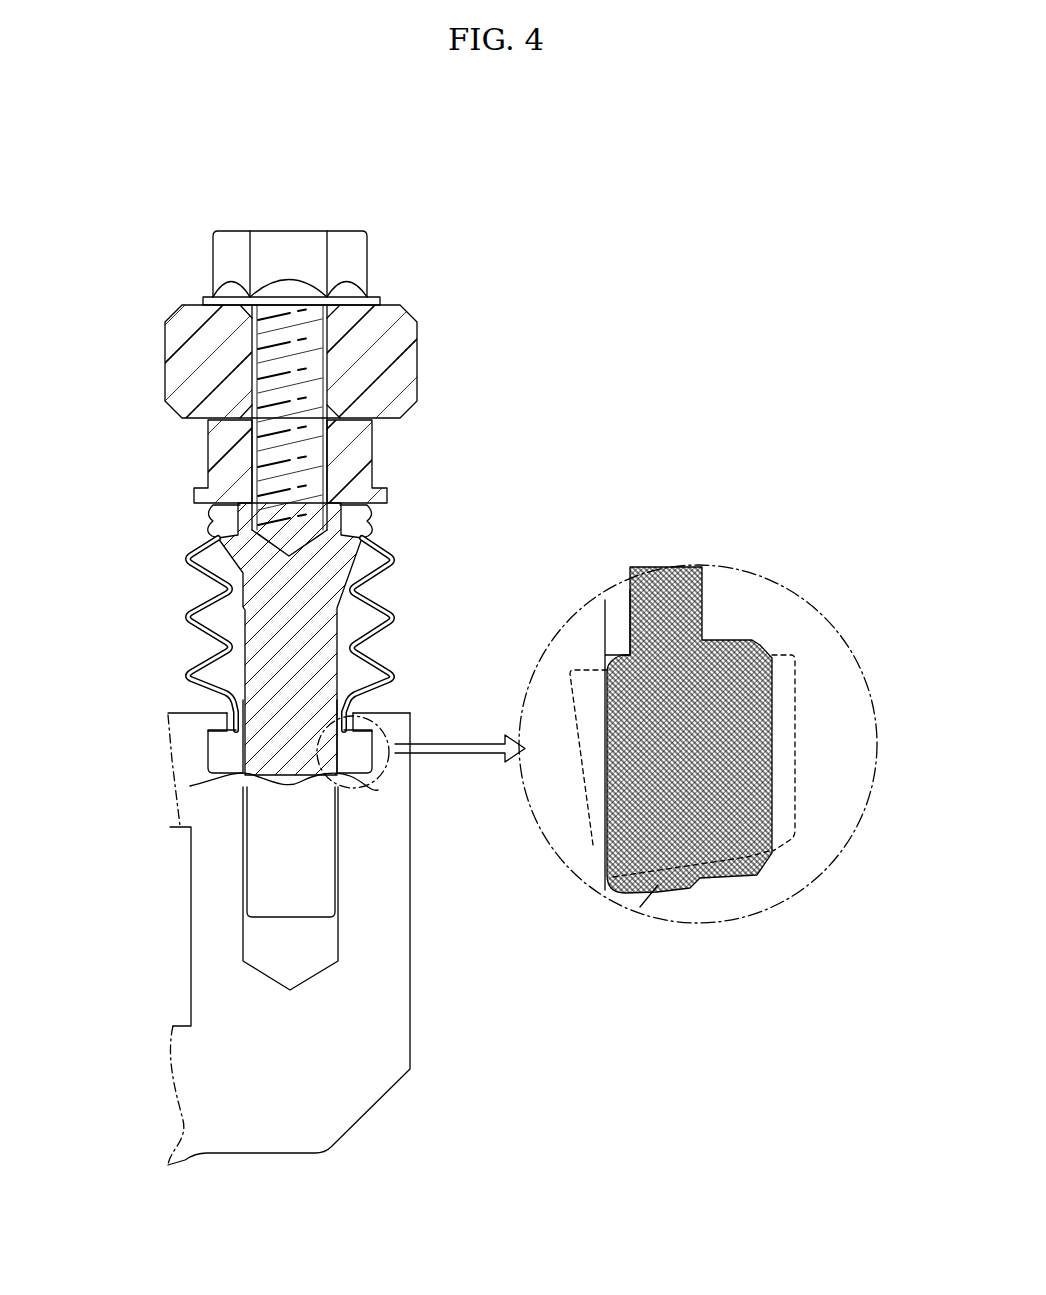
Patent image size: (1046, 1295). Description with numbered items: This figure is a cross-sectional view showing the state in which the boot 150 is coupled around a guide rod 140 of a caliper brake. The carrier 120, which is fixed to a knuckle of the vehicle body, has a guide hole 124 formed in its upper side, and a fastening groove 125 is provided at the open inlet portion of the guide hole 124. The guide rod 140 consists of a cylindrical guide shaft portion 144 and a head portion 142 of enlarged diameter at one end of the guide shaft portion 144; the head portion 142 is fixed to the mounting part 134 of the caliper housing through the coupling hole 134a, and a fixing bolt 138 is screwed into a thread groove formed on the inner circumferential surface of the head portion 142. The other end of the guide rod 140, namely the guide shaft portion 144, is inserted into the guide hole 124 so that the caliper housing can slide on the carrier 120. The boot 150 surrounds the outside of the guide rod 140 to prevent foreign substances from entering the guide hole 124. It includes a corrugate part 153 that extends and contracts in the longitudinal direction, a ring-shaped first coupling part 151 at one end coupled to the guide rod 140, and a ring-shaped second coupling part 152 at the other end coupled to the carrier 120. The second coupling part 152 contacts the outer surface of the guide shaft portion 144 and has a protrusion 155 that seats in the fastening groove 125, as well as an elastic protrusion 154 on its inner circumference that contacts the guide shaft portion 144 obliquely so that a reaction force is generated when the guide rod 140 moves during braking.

The carrier 120 is at (203, 920).
The guide hole 124 is at (245, 945).
The fastening groove 125 is at (216, 765).
The mounting part 134 is at (390, 313).
The coupling hole 134a is at (328, 359).
The fixing bolt 138 is at (286, 241).
The guide rod 140 is at (691, 744).
The head portion 142 is at (364, 453).
The guide shaft portion 144 is at (266, 622).
The boot 150 is at (275, 615).
The first coupling part 151 is at (358, 517).
The second coupling part 152 is at (208, 757).
The corrugate part 153 is at (396, 556).
The elastic protrusion 154 is at (574, 716).
The protrusion 155 is at (783, 707).